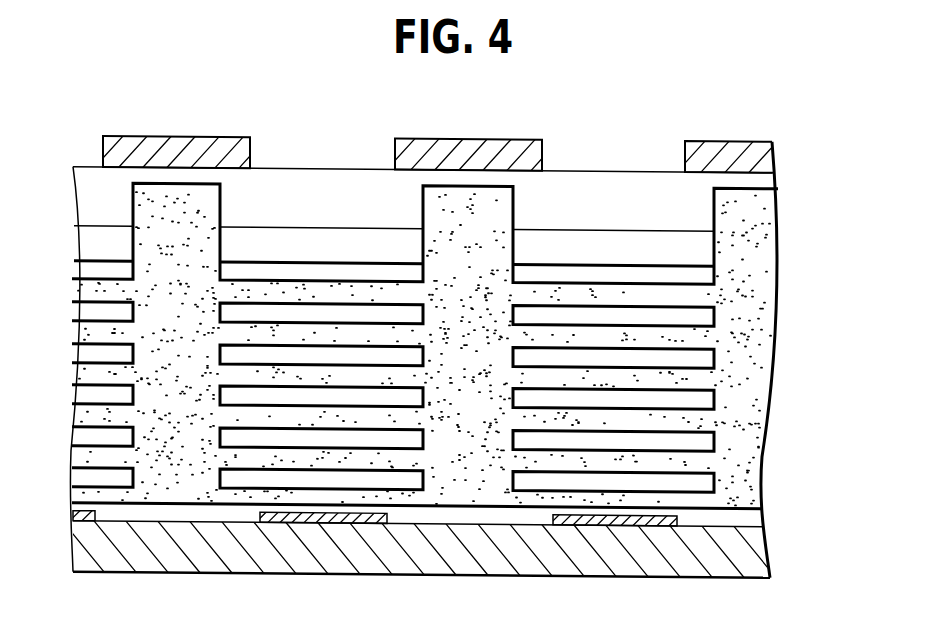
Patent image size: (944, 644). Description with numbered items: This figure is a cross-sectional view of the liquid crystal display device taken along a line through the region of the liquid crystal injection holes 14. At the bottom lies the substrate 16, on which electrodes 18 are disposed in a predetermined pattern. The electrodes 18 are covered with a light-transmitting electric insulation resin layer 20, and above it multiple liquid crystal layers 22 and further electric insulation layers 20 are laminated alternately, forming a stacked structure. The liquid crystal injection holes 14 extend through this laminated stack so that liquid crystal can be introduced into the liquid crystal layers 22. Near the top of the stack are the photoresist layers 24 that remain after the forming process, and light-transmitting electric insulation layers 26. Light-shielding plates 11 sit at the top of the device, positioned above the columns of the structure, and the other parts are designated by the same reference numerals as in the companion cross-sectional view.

The light-shielding plate 11 is at (248, 136).
The liquid crystal injection hole 14 is at (177, 458).
The substrate 16 is at (718, 564).
The electrode 18 is at (300, 515).
The electric insulation layer 20 is at (703, 269).
The liquid crystal layer 22 is at (698, 416).
The photoresist layer 24 is at (703, 246).
The light-transmitting electric insulation layer 26 is at (762, 178).